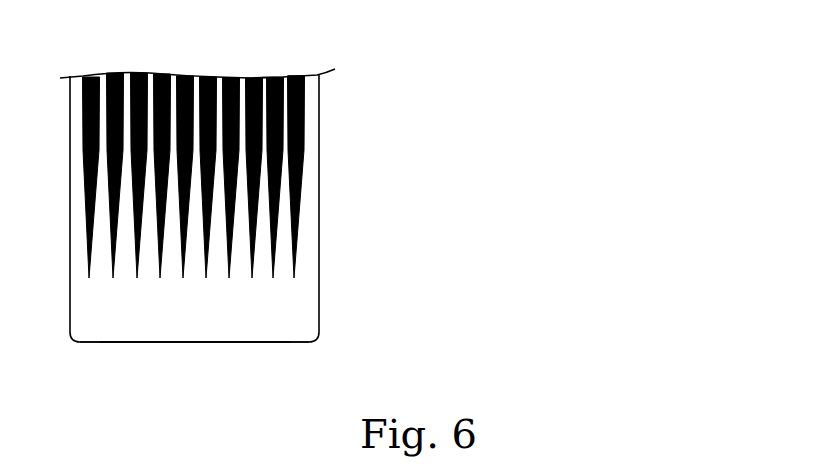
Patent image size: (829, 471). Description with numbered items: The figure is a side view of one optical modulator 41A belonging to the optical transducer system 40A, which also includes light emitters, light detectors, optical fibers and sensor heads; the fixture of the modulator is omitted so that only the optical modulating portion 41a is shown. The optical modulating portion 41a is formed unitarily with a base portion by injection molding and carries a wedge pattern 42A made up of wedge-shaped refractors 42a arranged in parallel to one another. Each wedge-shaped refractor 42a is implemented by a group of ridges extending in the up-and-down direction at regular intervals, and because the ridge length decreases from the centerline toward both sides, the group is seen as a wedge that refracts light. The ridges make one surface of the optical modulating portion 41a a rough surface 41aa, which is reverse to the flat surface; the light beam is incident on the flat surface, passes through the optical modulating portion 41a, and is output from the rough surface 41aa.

The optical transducer system 40A is at (380, 77).
The optical modulator 41A is at (320, 304).
The optical modulating portion 41a is at (247, 325).
The rough surface 41aa is at (188, 325).
The wedge pattern 42A is at (303, 183).
The wedge-shaped refractors 42a is at (270, 76).